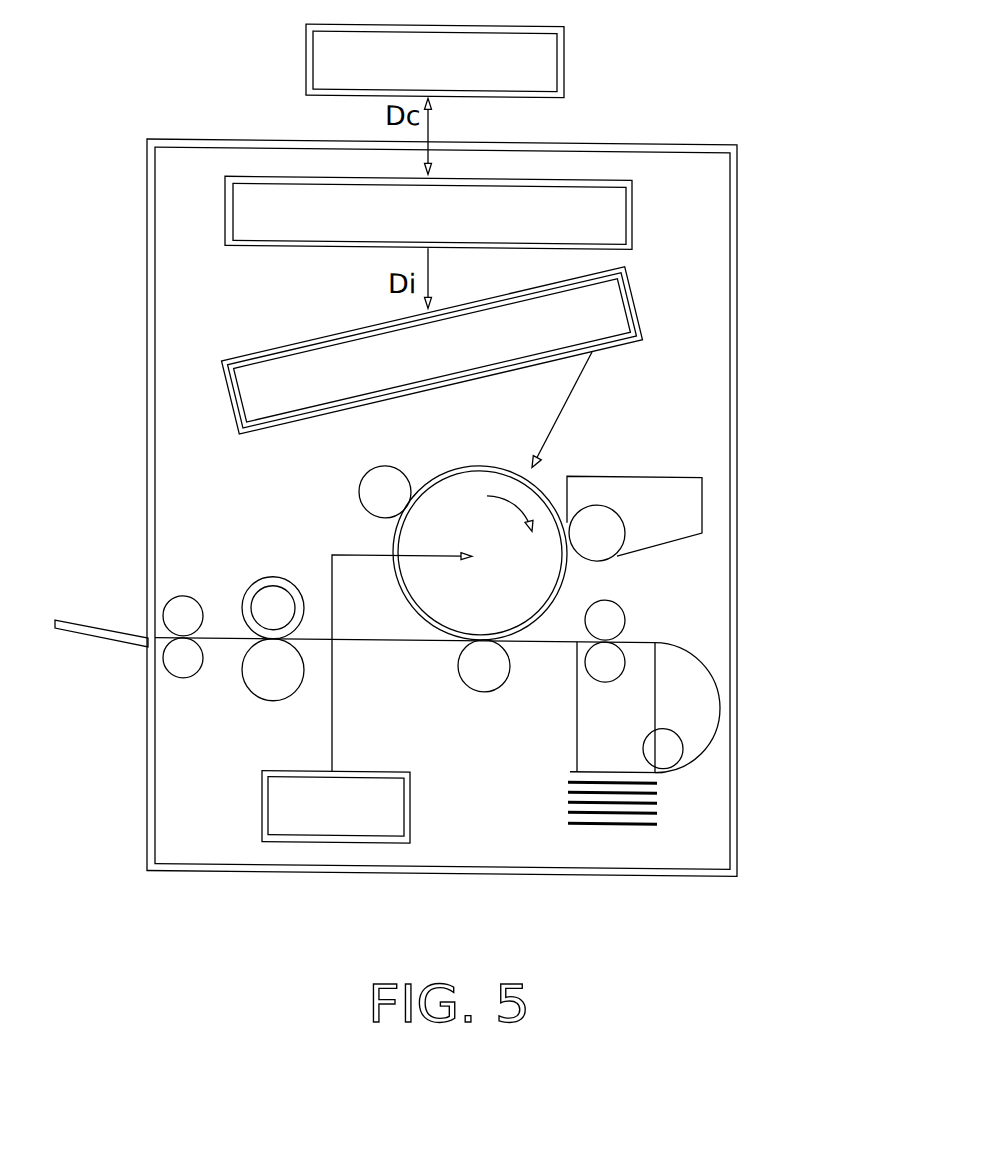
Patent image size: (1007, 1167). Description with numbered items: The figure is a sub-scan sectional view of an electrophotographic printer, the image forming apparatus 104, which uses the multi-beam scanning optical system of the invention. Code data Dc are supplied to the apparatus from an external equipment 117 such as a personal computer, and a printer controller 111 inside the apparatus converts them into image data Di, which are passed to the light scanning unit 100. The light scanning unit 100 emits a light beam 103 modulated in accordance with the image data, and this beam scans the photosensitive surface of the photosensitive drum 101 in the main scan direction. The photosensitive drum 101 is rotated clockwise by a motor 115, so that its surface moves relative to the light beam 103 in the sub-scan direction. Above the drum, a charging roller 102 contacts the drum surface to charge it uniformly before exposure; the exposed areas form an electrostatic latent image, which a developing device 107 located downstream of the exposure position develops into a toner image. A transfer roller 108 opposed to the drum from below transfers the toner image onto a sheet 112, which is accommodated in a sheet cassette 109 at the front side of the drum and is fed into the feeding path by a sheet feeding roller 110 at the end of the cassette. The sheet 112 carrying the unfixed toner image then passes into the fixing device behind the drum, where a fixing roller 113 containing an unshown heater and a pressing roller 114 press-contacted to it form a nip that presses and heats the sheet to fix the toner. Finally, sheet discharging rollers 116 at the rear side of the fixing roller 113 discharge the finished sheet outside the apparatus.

The light scanning unit 100 is at (258, 377).
The photosensitive drum 101 is at (560, 586).
The charging roller 102 is at (367, 477).
The light beam 103 is at (568, 395).
The image forming apparatus 104 is at (702, 133).
The developing device 107 is at (693, 500).
The transfer roller 108 is at (492, 681).
The sheet cassette 109 is at (562, 801).
The sheet feeding roller 110 is at (663, 746).
The printer controller 111 is at (632, 210).
The sheet 112 is at (390, 640).
The fixing roller 113 is at (267, 599).
The pressing roller 114 is at (262, 686).
The motor 115 is at (265, 808).
The sheet discharging rollers 116 is at (168, 615).
The external equipment 117 is at (557, 60).